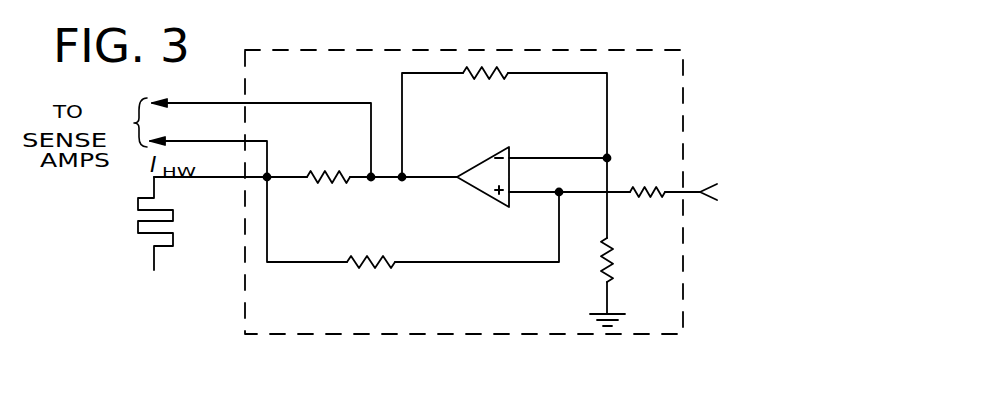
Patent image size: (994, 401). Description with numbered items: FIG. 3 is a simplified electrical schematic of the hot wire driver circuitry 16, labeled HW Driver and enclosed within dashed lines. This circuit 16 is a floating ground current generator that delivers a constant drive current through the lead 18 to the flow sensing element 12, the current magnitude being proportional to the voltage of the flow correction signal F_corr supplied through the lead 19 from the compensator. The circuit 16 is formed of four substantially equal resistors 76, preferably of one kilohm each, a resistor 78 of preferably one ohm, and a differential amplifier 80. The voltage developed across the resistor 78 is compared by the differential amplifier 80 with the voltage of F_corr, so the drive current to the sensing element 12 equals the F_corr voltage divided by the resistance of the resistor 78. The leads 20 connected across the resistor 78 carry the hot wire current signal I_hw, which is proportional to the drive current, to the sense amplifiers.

The flow sensing element 12 is at (138, 222).
The hot wire driver circuitry 16 is at (569, 50).
The lead 18 is at (202, 179).
The lead 19 is at (698, 191).
The leads 20 is at (213, 103).
The resistors 76 is at (494, 77).
The resistor 78 is at (310, 181).
The differential amplifier 80 is at (484, 163).